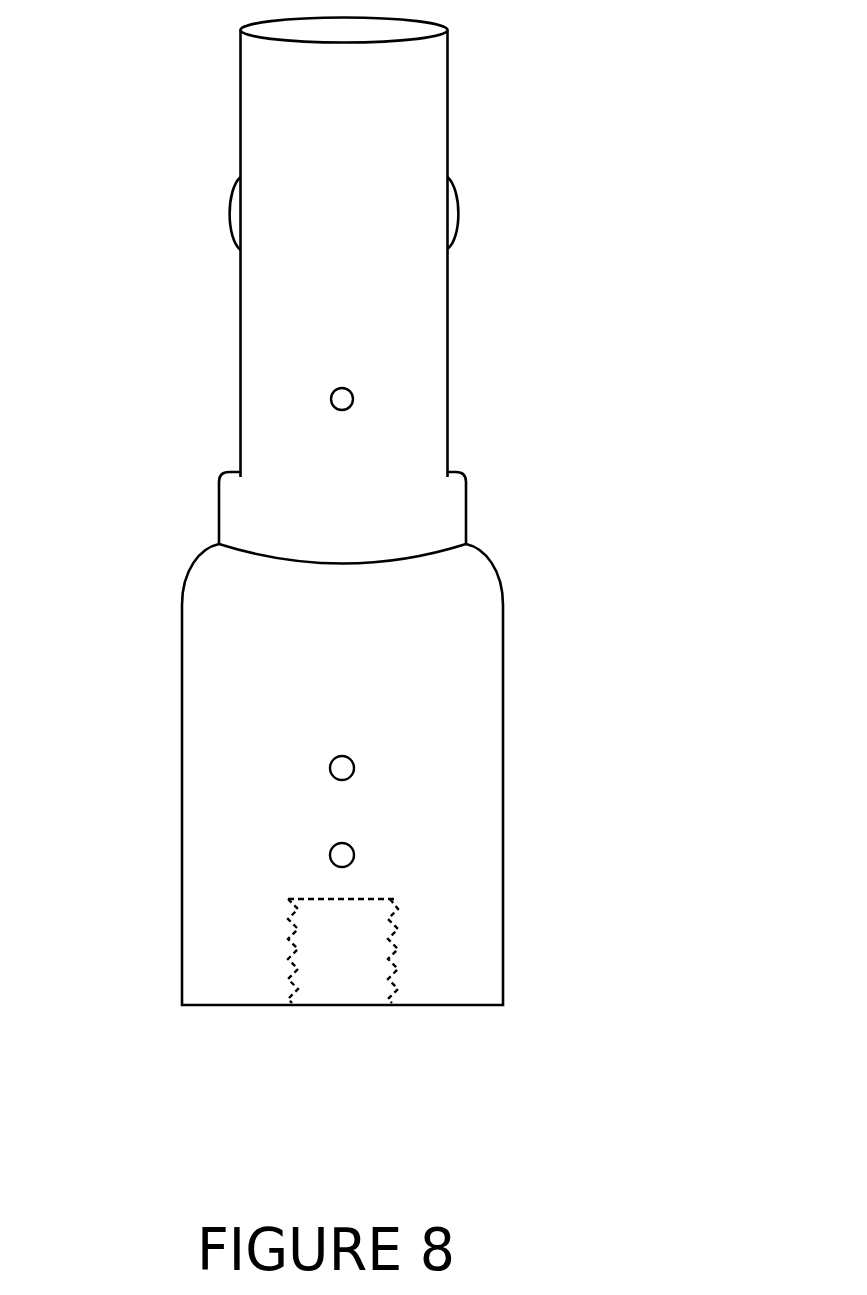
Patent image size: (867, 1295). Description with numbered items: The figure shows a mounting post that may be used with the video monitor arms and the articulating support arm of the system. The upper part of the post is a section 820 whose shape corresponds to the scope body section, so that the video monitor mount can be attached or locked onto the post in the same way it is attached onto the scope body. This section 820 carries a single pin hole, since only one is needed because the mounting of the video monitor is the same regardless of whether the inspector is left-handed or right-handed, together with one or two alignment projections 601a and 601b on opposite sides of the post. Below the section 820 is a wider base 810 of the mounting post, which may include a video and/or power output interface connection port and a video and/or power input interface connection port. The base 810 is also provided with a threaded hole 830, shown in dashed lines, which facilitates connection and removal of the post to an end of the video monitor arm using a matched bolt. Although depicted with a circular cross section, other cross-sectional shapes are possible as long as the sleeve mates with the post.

The base 810 is at (520, 760).
The section 820 is at (468, 270).
The threaded hole 830 is at (342, 977).
The alignment projection 601a is at (229, 220).
The alignment projection 601b is at (457, 197).